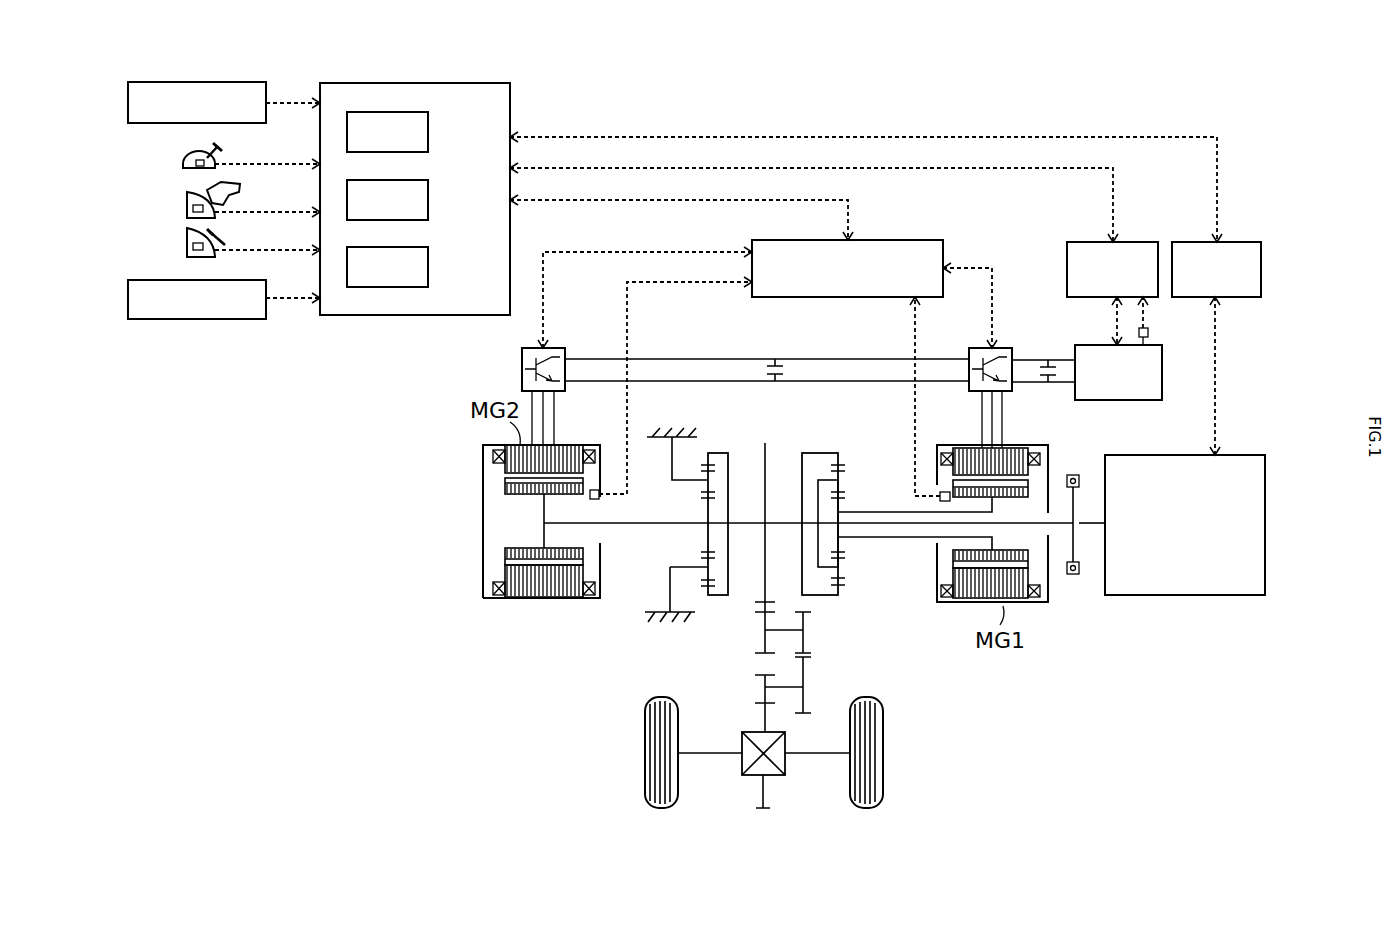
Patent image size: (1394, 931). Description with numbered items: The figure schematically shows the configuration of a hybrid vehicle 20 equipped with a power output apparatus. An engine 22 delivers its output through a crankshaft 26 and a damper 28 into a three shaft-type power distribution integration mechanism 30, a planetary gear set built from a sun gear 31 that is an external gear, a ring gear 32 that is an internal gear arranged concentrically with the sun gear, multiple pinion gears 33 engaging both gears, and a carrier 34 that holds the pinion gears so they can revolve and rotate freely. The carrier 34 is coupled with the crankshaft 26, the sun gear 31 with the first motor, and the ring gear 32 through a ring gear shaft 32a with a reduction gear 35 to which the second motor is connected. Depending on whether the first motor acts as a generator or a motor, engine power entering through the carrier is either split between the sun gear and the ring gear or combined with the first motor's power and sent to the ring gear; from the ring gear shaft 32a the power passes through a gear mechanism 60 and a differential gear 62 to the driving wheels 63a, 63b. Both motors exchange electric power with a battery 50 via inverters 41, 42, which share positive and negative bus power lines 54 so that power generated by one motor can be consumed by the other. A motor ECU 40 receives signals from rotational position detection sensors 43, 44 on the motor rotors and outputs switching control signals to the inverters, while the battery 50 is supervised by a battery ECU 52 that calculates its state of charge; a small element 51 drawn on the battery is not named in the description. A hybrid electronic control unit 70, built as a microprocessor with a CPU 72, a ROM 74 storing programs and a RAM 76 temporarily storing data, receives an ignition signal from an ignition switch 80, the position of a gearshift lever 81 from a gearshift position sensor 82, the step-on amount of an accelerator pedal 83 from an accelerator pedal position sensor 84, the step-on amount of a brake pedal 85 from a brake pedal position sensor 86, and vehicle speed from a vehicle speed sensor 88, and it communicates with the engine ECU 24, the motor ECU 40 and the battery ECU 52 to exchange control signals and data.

The hybrid vehicle 20 is at (1024, 114).
The engine 22 is at (1268, 488).
The engine ECU 24 is at (1235, 242).
The crankshaft 26 is at (1088, 523).
The damper 28 is at (1074, 575).
The power distribution integration mechanism 30 is at (846, 439).
The sun gear 31 is at (842, 538).
The ring gear 32 is at (842, 590).
The ring gear shaft 32a is at (745, 492).
The pinion gears 33 is at (842, 563).
The carrier 34 is at (808, 480).
The reduction gear 35 is at (713, 431).
The motor ECU 40 is at (888, 240).
The inverter 41 is at (1005, 348).
The inverter 42 is at (556, 348).
The rotational position detection sensor 43 is at (942, 490).
The rotational position detection sensor 44 is at (594, 490).
The battery 50 is at (1118, 400).
The temperature sensor 51 is at (1148, 332).
The battery ECU 52 is at (1092, 242).
The power lines 54 is at (831, 380).
The gear mechanism 60 is at (847, 671).
The differential gear 62 is at (790, 765).
The driving wheel 63a is at (645, 788).
The driving wheel 63b is at (883, 788).
The hybrid electronic control unit 70 is at (413, 83).
The CPU 72 is at (428, 132).
The ROM 74 is at (428, 199).
The RAM 76 is at (428, 267).
The ignition switch 80 is at (128, 97).
The gearshift lever 81 is at (210, 150).
The gearshift position sensor 82 is at (183, 164).
The accelerator pedal 83 is at (207, 190).
The accelerator pedal position sensor 84 is at (193, 208).
The brake pedal 85 is at (208, 231).
The brake pedal position sensor 86 is at (193, 247).
The vehicle speed sensor 88 is at (128, 296).